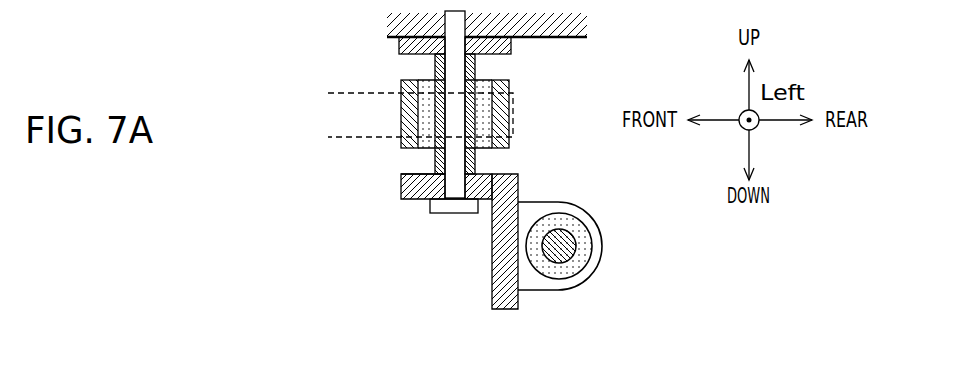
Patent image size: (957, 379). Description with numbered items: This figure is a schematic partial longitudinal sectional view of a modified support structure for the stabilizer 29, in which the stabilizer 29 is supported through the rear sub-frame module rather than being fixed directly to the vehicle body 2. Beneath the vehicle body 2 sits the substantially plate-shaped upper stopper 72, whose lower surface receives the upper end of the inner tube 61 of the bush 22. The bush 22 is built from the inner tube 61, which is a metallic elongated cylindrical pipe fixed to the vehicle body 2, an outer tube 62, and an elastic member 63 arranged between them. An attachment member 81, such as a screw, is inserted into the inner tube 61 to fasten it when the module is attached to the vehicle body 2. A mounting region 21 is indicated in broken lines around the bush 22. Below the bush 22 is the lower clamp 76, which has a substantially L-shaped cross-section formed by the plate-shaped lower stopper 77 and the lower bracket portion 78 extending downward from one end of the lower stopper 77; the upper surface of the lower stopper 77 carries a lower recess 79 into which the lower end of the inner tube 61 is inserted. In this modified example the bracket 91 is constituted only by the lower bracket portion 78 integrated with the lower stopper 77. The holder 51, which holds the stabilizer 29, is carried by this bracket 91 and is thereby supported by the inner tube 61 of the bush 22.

The vehicle body 2 is at (582, 14).
The upper stopper 72 is at (511, 50).
The bush 22 is at (371, 109).
The inner tube 61 is at (435, 64).
The elastic member 63 is at (427, 93).
The outer tube 62 is at (401, 115).
The mounting region 21 is at (340, 139).
The lower clamp 76 is at (392, 230).
The lower recess 79 is at (420, 168).
The lower stopper 77 is at (401, 188).
The lower bracket portion 78 is at (418, 241).
The bracket 91 is at (497, 268).
The attachment member 81 is at (452, 213).
The holder 51 is at (603, 237).
The stabilizer 29 is at (565, 265).